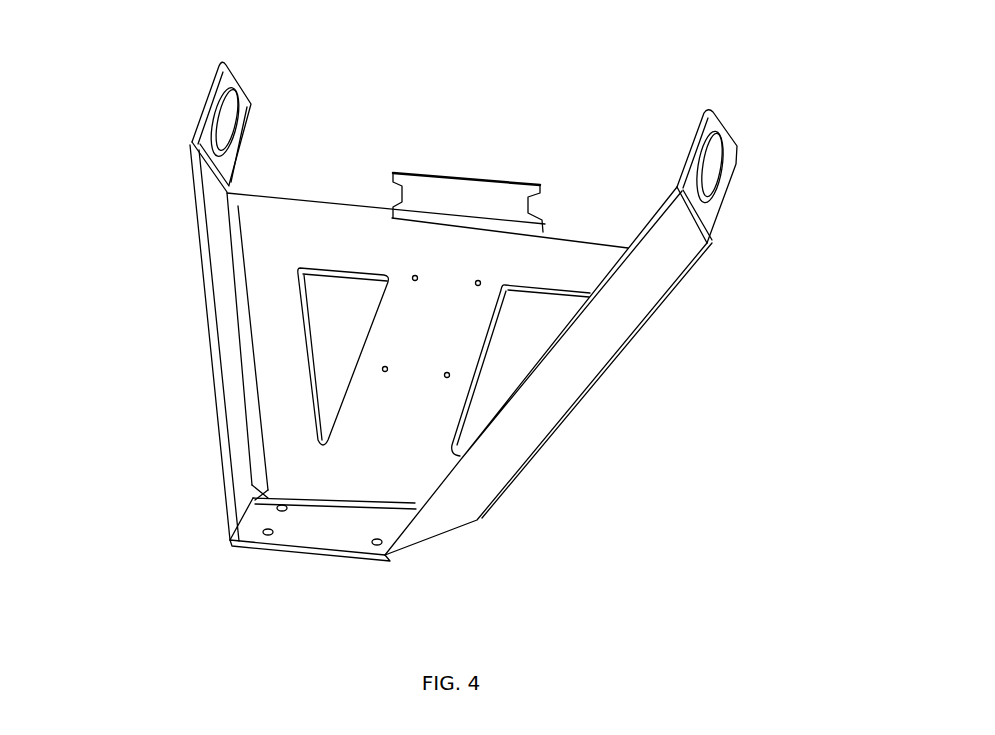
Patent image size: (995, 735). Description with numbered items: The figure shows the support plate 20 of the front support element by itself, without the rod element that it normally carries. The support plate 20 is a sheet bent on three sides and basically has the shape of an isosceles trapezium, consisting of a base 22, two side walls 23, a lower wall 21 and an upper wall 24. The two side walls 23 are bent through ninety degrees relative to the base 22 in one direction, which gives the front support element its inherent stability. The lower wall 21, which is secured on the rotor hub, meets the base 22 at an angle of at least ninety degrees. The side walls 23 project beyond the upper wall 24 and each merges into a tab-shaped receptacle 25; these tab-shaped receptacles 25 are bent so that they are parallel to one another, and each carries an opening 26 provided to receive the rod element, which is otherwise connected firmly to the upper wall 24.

The support plate 20 is at (488, 96).
The lower wall 21 is at (316, 533).
The base 22 is at (394, 263).
The side walls 23 is at (219, 283).
The upper wall 24 is at (497, 209).
The tab-shaped receptacle 25 is at (711, 118).
The openings 26 is at (222, 116).